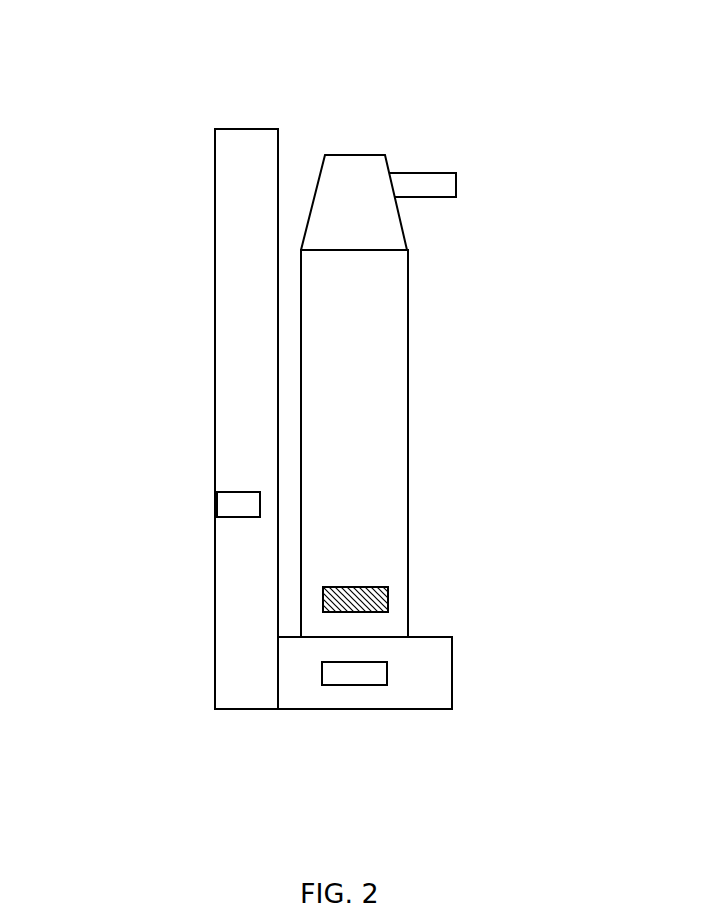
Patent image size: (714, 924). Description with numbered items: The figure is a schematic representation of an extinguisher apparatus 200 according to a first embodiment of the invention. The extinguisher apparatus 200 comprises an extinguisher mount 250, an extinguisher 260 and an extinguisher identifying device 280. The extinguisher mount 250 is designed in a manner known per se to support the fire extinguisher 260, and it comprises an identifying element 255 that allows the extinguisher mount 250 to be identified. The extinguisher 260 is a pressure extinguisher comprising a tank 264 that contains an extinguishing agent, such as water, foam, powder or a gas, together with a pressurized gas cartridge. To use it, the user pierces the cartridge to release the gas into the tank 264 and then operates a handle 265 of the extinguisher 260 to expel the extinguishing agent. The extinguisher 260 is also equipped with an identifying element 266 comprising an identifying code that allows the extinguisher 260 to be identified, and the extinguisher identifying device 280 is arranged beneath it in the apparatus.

The extinguisher apparatus 200 is at (285, 62).
The extinguisher mount 250 is at (237, 220).
The identifying element 255 is at (222, 503).
The extinguisher 260 is at (436, 385).
The tank 264 is at (378, 483).
The handle 265 is at (436, 189).
The identifying element 266 is at (382, 600).
The extinguisher identifying device 280 is at (357, 677).